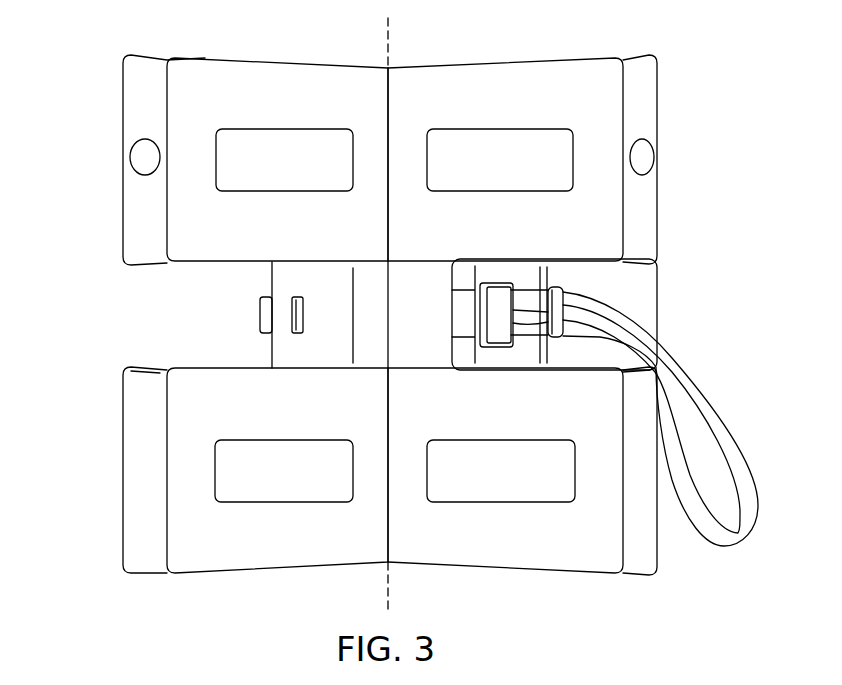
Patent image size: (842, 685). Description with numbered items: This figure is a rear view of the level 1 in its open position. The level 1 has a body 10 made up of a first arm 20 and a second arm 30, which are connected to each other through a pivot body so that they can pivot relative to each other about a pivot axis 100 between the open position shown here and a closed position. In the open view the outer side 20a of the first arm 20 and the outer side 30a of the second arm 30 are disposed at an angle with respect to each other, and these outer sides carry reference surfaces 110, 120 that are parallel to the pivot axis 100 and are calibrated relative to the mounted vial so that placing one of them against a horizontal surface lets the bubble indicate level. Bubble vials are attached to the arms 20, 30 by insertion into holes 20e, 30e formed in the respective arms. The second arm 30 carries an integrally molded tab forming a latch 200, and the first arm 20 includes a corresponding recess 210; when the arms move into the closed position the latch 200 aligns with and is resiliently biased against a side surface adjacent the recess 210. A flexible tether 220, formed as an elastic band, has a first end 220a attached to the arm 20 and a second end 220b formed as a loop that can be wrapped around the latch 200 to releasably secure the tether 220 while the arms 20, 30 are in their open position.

The level 1 is at (76, 86).
The body 10 is at (404, 315).
The first arm 20 is at (552, 82).
The outer side of first arm 20a is at (522, 141).
The hole in first arm 20e is at (652, 153).
The second arm 30 is at (257, 80).
The outer side of second arm 30a is at (255, 141).
The hole in second arm 30e is at (143, 160).
The pivot axis 100 is at (391, 42).
The reference surface 110 is at (510, 233).
The reference surface 120 is at (291, 234).
The latch 200 is at (258, 322).
The recess 210 is at (482, 355).
The flexible tether 220 is at (716, 539).
The first end of flexible tether 220a is at (567, 288).
The second end of flexible tether 220b is at (667, 445).